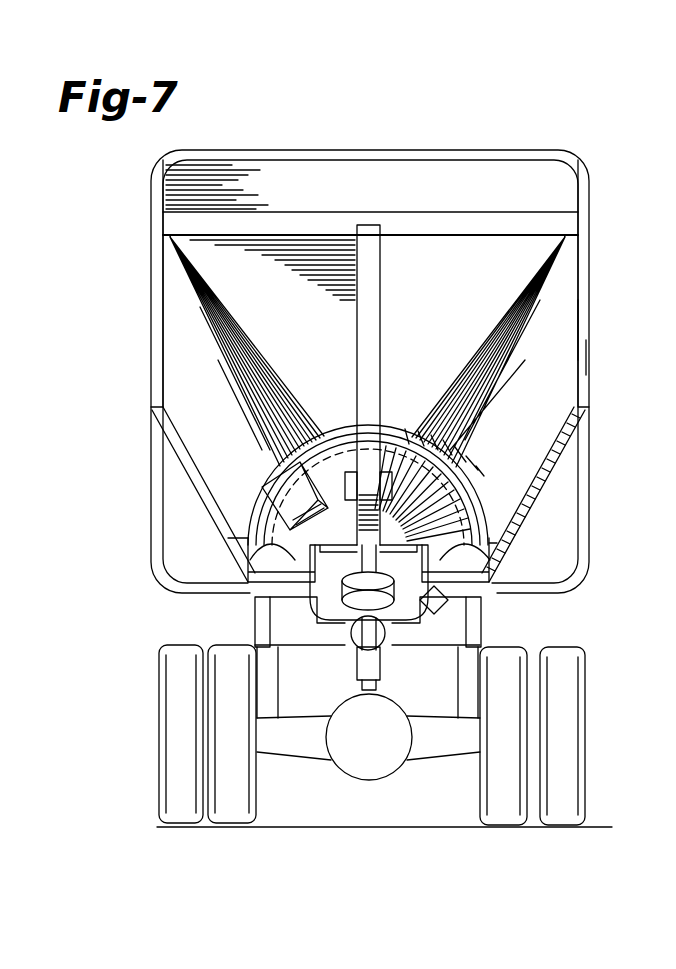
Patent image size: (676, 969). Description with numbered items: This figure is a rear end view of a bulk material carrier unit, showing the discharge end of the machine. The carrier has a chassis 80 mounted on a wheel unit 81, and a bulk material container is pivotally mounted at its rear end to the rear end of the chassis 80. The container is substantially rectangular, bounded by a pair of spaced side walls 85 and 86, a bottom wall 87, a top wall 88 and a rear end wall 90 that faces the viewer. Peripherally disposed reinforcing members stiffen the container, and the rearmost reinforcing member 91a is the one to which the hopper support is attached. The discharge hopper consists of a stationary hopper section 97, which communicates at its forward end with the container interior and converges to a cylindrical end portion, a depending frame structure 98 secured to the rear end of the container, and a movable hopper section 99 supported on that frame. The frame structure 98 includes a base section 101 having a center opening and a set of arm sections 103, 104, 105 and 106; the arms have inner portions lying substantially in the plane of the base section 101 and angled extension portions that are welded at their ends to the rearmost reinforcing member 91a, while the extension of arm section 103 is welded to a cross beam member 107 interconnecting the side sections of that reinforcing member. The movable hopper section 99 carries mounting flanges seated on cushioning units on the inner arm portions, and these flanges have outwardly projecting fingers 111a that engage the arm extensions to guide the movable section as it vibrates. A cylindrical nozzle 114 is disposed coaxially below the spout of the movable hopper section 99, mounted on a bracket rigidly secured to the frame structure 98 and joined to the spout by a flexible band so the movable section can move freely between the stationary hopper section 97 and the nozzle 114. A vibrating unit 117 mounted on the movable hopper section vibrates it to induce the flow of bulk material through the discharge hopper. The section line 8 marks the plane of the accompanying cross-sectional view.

The section line 8- 8 is at (367, 183).
The chassis 80 is at (255, 625).
The wheel unit 81 is at (258, 796).
The side wall 85 is at (163, 323).
The side wall 86 is at (583, 330).
The bottom wall 87 is at (516, 600).
The top wall 88 is at (318, 155).
The rear end wall 90 is at (571, 197).
The rearmost reinforcing member 91a is at (585, 285).
The stationary hopper section 97 is at (542, 393).
The depending frame structure 98 is at (592, 358).
The movable hopper section 99 is at (488, 500).
The base section 101 is at (428, 615).
The arm section 103 is at (418, 372).
The arm section 104 is at (540, 517).
The arm section 105 is at (357, 672).
The arm section 106 is at (190, 466).
The cross beam member 107 is at (455, 238).
The outwardly projecting fingers 111a is at (518, 548).
The cylindrical nozzle 114 is at (350, 636).
The vibrating unit 117 is at (266, 492).